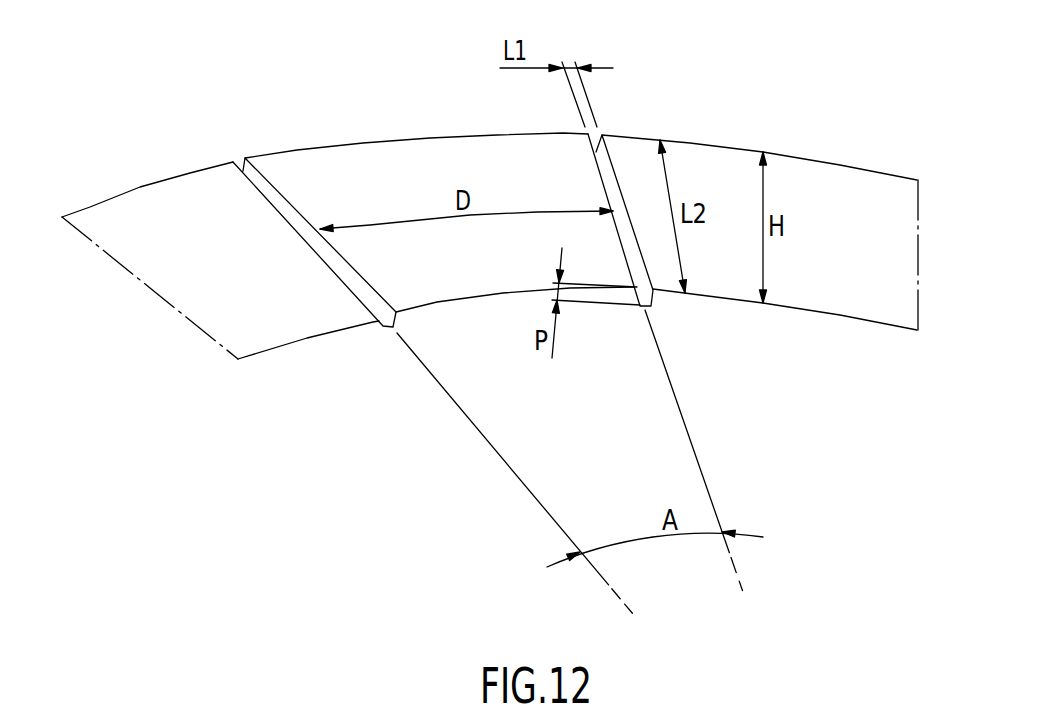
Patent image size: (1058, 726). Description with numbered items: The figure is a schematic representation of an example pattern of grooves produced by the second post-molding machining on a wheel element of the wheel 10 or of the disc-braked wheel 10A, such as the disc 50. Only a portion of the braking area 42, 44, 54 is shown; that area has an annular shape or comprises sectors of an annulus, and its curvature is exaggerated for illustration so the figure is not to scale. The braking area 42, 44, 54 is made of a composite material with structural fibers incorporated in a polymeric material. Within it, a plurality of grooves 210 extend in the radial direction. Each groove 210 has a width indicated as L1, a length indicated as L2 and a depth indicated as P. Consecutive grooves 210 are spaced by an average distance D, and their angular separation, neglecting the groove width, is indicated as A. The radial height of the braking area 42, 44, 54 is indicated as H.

The wheel 10 is at (494, 312).
The wheel 10A is at (494, 312).
The disc 50 is at (494, 312).
The braking area 42 is at (764, 213).
The braking area 44 is at (764, 213).
The braking area 54 is at (843, 217).
The groove 210 is at (623, 342).